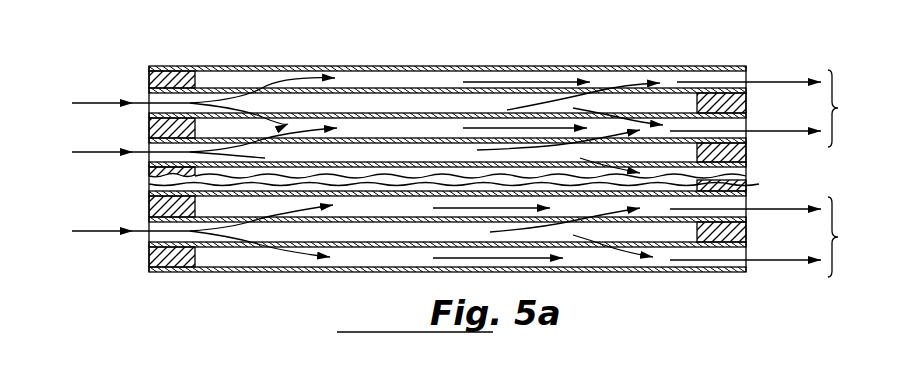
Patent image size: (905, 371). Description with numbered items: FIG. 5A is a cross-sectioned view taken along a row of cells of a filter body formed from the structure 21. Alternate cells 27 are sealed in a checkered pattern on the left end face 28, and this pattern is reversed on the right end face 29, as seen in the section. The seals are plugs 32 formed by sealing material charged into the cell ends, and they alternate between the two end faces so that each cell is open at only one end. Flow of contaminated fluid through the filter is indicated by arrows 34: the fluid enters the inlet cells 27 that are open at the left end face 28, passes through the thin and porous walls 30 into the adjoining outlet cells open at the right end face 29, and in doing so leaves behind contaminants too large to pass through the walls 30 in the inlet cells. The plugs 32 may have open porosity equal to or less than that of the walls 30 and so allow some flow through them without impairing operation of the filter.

The structure 21 is at (283, 276).
The cells 27 is at (457, 110).
The end face 28 is at (77, 317).
The end face 29 is at (752, 68).
The walls 30 is at (392, 110).
The plugs 32 is at (149, 80).
The arrows 34 is at (103, 103).